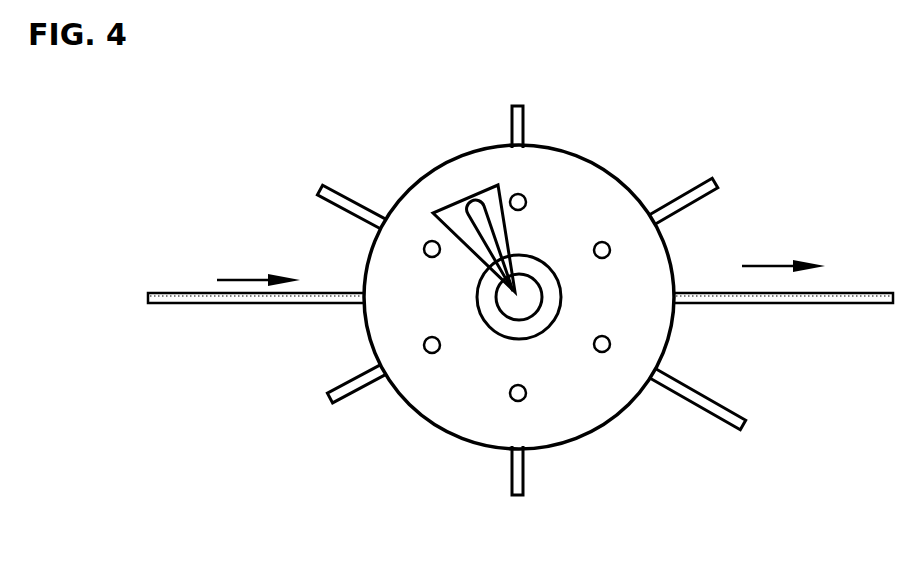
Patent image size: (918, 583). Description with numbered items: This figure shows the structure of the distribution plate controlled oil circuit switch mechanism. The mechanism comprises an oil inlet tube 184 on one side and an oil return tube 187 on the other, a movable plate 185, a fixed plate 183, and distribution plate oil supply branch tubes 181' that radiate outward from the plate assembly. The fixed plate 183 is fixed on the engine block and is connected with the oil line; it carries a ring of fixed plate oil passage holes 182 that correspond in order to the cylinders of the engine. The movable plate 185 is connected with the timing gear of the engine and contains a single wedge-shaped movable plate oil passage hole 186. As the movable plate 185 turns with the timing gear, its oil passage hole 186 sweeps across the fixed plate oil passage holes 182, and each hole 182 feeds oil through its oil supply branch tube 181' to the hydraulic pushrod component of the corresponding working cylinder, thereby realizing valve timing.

The distribution plate oil supply branch tubes 181' is at (465, 333).
The fixed plate oil passage holes 182 is at (510, 395).
The fixed plate 183 is at (425, 307).
The oil inlet tube 184 is at (283, 303).
The movable plate 185 is at (514, 292).
The movable plate oil passage hole 186 is at (470, 216).
The oil return tube 187 is at (783, 294).